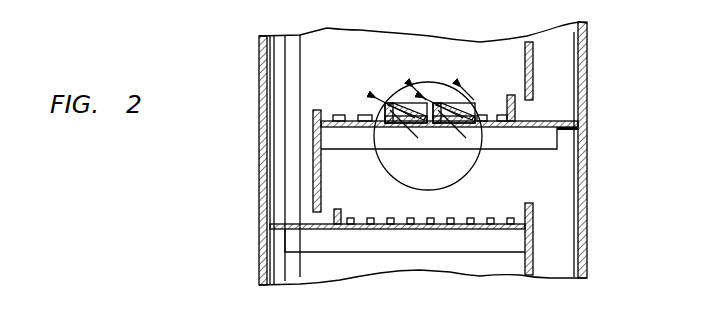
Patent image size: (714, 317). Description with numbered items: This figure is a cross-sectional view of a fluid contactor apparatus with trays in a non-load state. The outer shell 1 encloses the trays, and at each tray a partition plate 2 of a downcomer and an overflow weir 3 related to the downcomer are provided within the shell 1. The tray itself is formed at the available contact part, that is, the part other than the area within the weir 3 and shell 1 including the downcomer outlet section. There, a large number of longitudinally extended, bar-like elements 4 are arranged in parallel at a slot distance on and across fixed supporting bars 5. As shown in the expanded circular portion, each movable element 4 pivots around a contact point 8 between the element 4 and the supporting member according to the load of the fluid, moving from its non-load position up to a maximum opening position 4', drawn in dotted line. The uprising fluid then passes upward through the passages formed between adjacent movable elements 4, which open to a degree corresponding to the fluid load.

The outer shell 1 is at (585, 48).
The partition plate 2 is at (316, 110).
The overflow weir 3 is at (515, 108).
The bar-like element 4 is at (434, 162).
The maximum opening position 4' is at (454, 91).
The supporting bar 5 is at (505, 149).
The contact point 8 is at (457, 118).